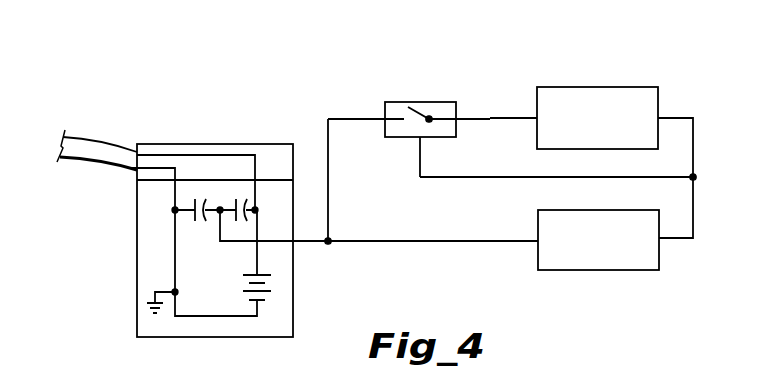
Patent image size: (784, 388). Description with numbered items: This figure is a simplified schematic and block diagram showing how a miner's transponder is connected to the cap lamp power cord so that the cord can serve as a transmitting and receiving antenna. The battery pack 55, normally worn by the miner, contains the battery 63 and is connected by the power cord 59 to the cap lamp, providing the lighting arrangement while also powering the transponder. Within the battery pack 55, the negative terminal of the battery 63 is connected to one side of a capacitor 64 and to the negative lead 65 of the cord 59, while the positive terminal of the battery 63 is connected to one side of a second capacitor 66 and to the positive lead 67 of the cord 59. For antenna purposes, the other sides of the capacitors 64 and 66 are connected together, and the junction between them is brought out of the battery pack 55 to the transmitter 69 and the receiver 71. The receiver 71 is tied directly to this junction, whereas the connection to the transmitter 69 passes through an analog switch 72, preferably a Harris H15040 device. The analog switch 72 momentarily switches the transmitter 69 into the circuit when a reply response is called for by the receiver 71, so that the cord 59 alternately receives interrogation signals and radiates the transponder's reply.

The battery pack 55 is at (137, 279).
The power cord 59 is at (88, 168).
The battery 63 is at (243, 293).
The capacitor 64 is at (204, 217).
The negative lead 65 is at (173, 192).
The capacitor 66 is at (248, 206).
The positive lead 67 is at (185, 155).
The transmitter 69 is at (635, 87).
The receiver 71 is at (602, 270).
The analog switch 72 is at (396, 137).